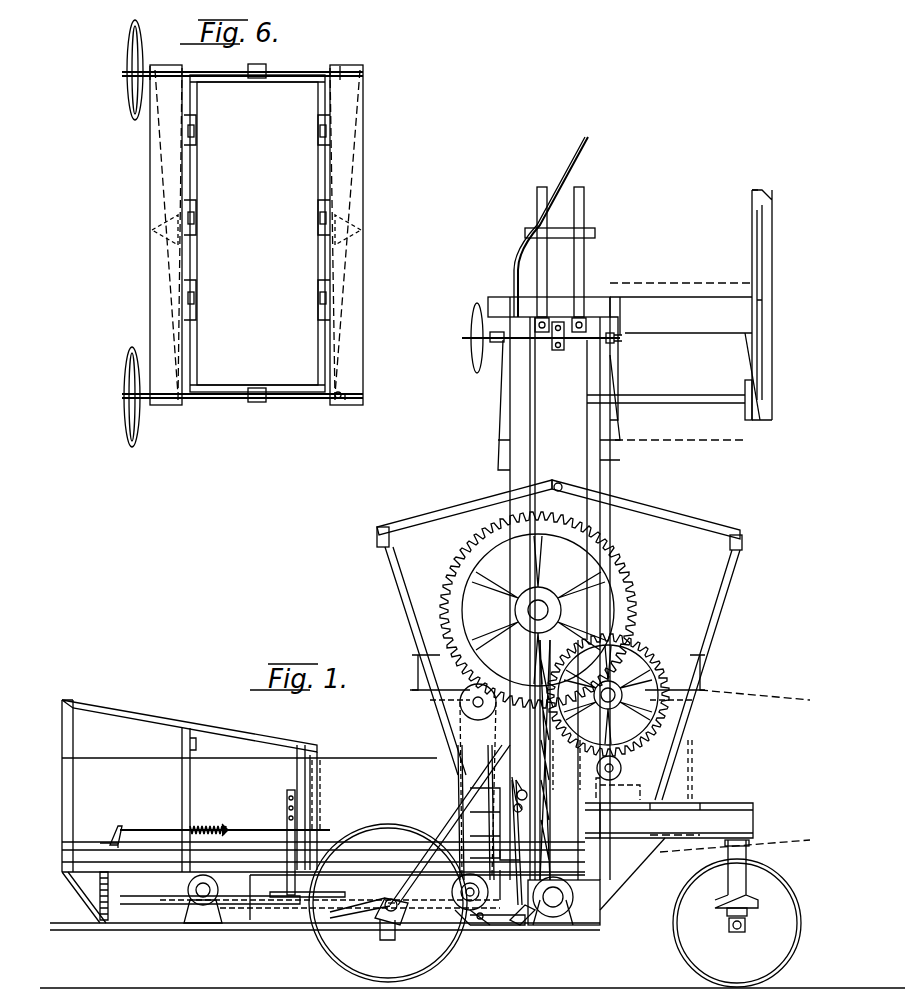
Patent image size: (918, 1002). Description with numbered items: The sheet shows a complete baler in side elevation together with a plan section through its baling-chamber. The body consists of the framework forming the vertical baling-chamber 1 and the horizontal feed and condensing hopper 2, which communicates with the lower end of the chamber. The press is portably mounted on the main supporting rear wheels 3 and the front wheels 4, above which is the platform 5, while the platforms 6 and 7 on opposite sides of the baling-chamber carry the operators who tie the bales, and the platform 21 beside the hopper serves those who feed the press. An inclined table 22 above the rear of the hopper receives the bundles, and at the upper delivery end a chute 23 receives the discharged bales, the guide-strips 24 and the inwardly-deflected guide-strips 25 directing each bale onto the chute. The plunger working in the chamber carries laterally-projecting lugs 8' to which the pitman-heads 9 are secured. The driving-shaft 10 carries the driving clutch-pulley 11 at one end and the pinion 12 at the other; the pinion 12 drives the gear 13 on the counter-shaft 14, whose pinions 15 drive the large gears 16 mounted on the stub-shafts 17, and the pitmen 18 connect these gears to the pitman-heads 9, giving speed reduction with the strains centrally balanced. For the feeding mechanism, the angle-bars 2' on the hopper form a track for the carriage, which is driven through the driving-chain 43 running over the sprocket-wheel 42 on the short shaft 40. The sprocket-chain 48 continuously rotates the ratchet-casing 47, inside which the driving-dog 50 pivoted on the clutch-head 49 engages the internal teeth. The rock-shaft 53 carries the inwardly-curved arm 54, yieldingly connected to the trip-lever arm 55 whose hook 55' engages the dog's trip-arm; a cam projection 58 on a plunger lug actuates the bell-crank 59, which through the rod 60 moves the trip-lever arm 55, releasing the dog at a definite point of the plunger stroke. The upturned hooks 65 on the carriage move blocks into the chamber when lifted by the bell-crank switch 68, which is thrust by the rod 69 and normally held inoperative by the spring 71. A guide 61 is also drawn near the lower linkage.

In FIG. 6, the baling-chamber 1 is at (256, 235).
In FIG. 1, the baling-chamber 1 is at (554, 588).
In FIG. 1, the feed and condensing hopper 2 is at (325, 844).
In FIG. 1, the angle-bars 2' is at (98, 795).
In FIG. 1, the main supporting rear wheels 3 is at (325, 955).
In FIG. 1, the front wheels 4 is at (678, 955).
In FIG. 1, the platform 5 is at (763, 780).
In FIG. 1, the platform 6 is at (640, 303).
In FIG. 1, the platform 7 is at (440, 690).
In FIG. 1, the laterally-projecting lugs 8' is at (632, 879).
In FIG. 1, the pitman-head 9 is at (565, 918).
In FIG. 1, the driving-shaft 10 is at (606, 785).
In FIG. 1, the driving clutch-pulley 11 is at (690, 755).
In FIG. 1, the pinion 12 is at (620, 770).
In FIG. 1, the gear 13 is at (640, 655).
In FIG. 1, the counter-shaft 14 is at (622, 705).
In FIG. 1, the pinions 15 is at (590, 706).
In FIG. 1, the large gears 16 is at (620, 596).
In FIG. 1, the stub-shafts 17 is at (530, 612).
In FIG. 1, the pitmen 18 is at (560, 866).
In FIG. 1, the platforms 21 is at (300, 902).
In FIG. 1, the inclined table 22 is at (240, 742).
In FIG. 1, the chute 23 is at (772, 358).
In FIG. 6, the guide-strips 24 is at (280, 70).
In FIG. 1, the guide-strips 24 is at (580, 265).
In FIG. 6, the inwardly-deflected guide-strips 25 is at (186, 285).
In FIG. 1, the inwardly-deflected guide-strips 25 is at (585, 160).
In FIG. 1, the short shaft 40 is at (190, 898).
In FIG. 1, the sprocket-wheel 42 is at (188, 889).
In FIG. 1, the driving-chain 43 is at (240, 910).
In FIG. 1, the ratchet-casing 47 is at (452, 890).
In FIG. 1, the sprocket-chain 48 is at (476, 800).
In FIG. 1, the clutch-head 49 is at (458, 896).
In FIG. 1, the driving-dog 50 is at (460, 915).
In FIG. 1, the rock-shaft 53 is at (505, 925).
In FIG. 1, the inwardly-curved arm 54 is at (526, 930).
In FIG. 1, the trip-lever arm 55 is at (484, 936).
In FIG. 1, the hook 55' is at (470, 929).
In FIG. 1, the cam projection 58 is at (470, 700).
In FIG. 1, the bell-crank 59 is at (510, 795).
In FIG. 1, the rod 60 is at (512, 832).
In FIG. 1, the guide 61 is at (502, 895).
In FIG. 1, the hooks 65 is at (462, 783).
In FIG. 1, the bell-crank switch 68 is at (112, 835).
In FIG. 1, the rod 69 is at (152, 830).
In FIG. 1, the spring 71 is at (210, 828).